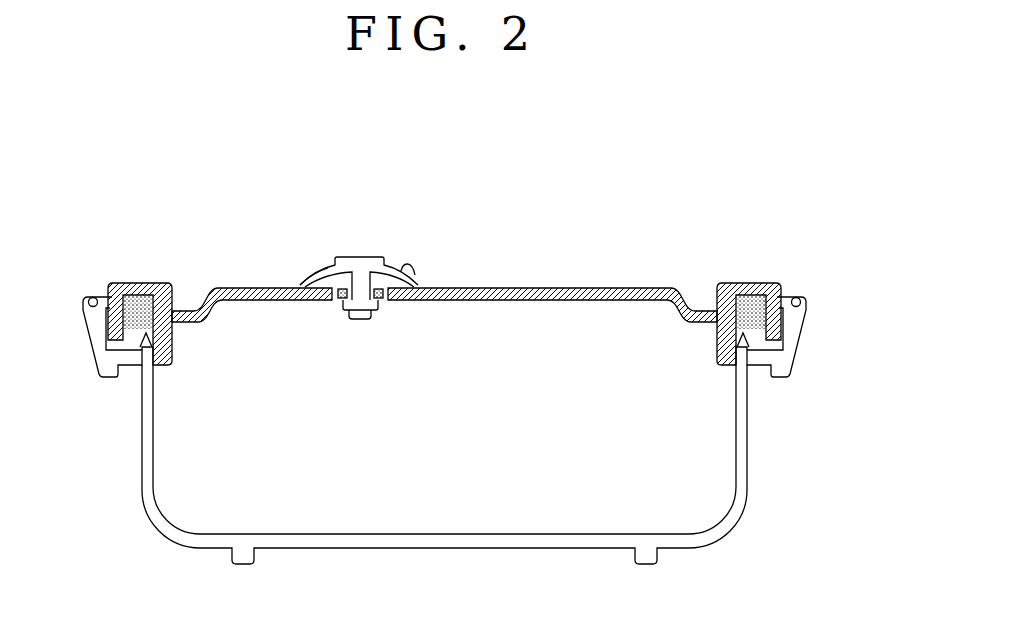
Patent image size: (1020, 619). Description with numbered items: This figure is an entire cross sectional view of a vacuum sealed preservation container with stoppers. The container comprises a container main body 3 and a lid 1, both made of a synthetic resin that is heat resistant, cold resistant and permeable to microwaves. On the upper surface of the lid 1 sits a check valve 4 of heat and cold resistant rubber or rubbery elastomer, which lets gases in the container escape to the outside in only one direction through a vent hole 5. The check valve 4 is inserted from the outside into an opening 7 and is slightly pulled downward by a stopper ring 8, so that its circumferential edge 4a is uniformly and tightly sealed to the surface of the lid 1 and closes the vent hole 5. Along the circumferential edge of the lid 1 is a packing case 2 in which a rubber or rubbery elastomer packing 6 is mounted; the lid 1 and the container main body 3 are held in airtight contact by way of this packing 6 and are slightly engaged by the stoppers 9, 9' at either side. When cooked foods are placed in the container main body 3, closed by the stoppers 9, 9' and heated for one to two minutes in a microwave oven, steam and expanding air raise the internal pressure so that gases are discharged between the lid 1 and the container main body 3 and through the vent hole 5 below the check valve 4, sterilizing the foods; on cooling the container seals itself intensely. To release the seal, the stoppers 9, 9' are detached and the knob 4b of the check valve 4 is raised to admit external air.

The lid 1 is at (540, 287).
The packing case 2 is at (141, 283).
The container main body 3 is at (156, 447).
The check valve 4 is at (378, 258).
The circumferential edge 4a is at (299, 284).
The knob 4b is at (418, 270).
The vent hole 5 is at (337, 300).
The packing 6 is at (173, 288).
The opening 7 is at (381, 300).
The stopper ring 8 is at (376, 302).
The stopper 9 is at (94, 357).
The stopper 9' is at (813, 337).